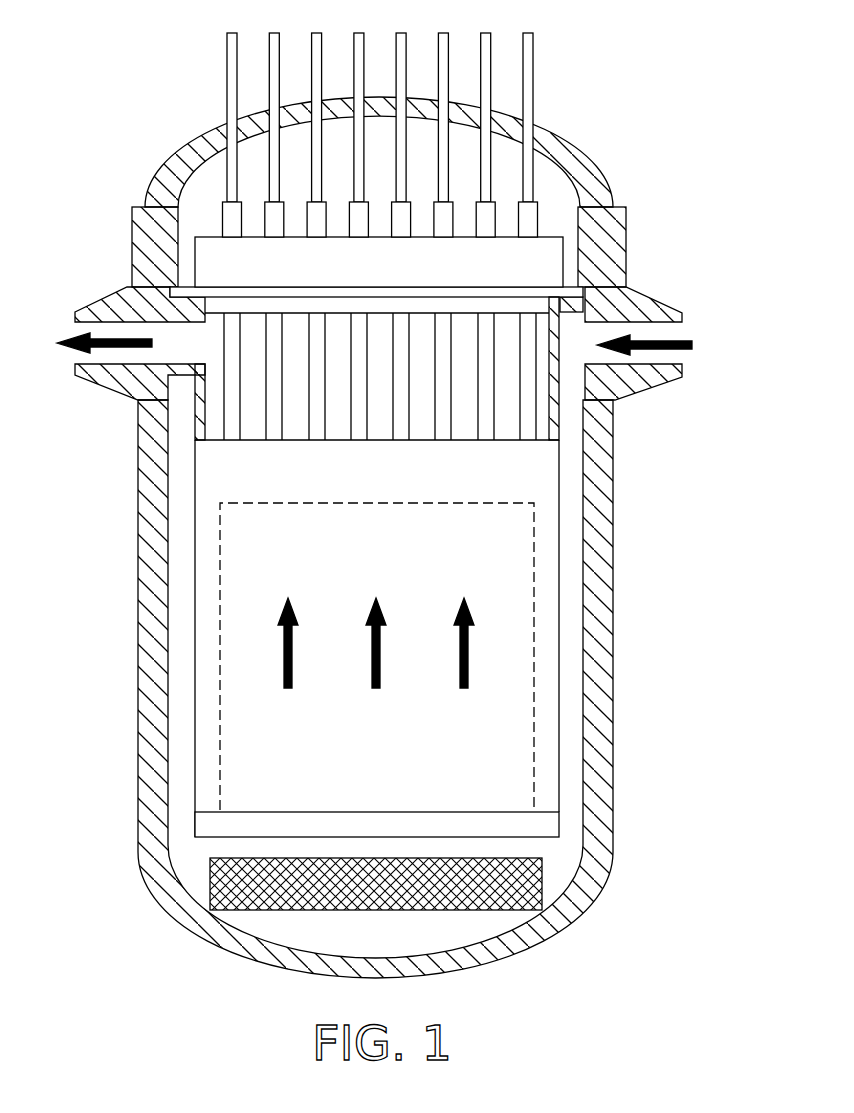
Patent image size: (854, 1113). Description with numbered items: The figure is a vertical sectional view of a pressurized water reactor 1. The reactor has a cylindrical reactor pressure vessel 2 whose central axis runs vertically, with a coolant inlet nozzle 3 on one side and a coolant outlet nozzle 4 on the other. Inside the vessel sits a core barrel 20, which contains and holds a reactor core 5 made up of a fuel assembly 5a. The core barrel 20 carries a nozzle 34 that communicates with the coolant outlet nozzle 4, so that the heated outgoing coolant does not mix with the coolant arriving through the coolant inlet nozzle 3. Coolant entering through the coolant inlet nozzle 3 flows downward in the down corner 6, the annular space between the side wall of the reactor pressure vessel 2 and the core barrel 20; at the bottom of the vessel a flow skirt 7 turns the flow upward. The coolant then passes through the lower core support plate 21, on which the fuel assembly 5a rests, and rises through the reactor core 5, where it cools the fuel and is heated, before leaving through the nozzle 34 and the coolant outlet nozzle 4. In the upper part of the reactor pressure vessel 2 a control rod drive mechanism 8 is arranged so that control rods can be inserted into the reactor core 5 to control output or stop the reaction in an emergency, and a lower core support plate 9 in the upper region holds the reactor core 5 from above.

The pressurized water reactor 1 is at (633, 87).
The reactor pressure vessel 2 is at (615, 538).
The coolant inlet nozzle 3 is at (648, 298).
The coolant outlet nozzle 4 is at (95, 387).
The reactor core 5 is at (533, 688).
The fuel assembly 5a is at (493, 742).
The down corner 6 is at (570, 492).
The flow skirt 7 is at (542, 877).
The control rod drive mechanism 8 is at (227, 80).
The lower core support plate 9 is at (210, 258).
The core barrel 20 is at (560, 605).
The lower core support plate 21 is at (558, 825).
The nozzle 34 is at (185, 372).